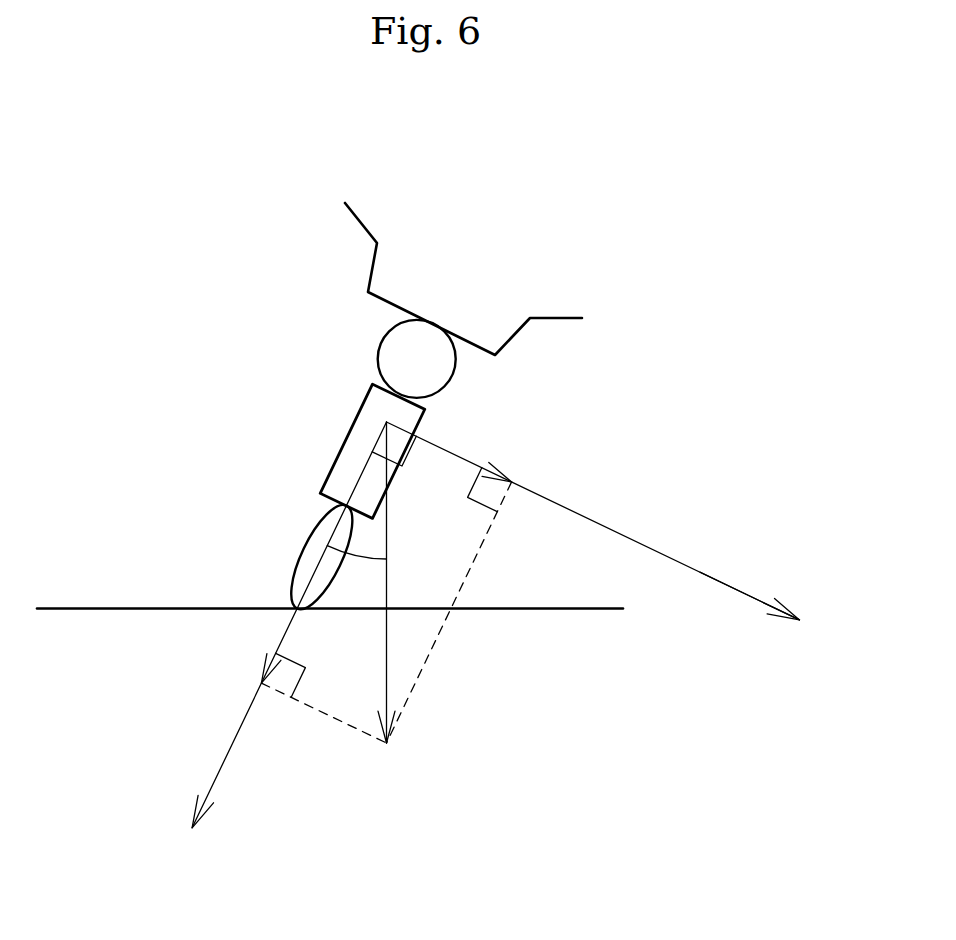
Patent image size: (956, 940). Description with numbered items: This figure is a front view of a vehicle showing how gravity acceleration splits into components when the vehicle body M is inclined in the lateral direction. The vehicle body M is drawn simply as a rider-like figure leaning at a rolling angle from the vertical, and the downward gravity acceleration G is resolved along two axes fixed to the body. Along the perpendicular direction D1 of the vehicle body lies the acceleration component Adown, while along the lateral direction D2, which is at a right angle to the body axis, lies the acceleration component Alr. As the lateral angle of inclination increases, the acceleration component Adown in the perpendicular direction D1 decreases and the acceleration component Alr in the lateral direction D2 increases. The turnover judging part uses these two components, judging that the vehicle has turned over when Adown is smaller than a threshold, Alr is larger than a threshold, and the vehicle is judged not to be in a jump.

The vehicle body M is at (435, 322).
The acceleration component in lateral direction Alr is at (452, 448).
The lateral direction D2 is at (782, 616).
The perpendicular direction D1 is at (271, 651).
The gravitational acceleration G is at (387, 660).
The acceleration component in perpendicular direction Adown is at (290, 627).